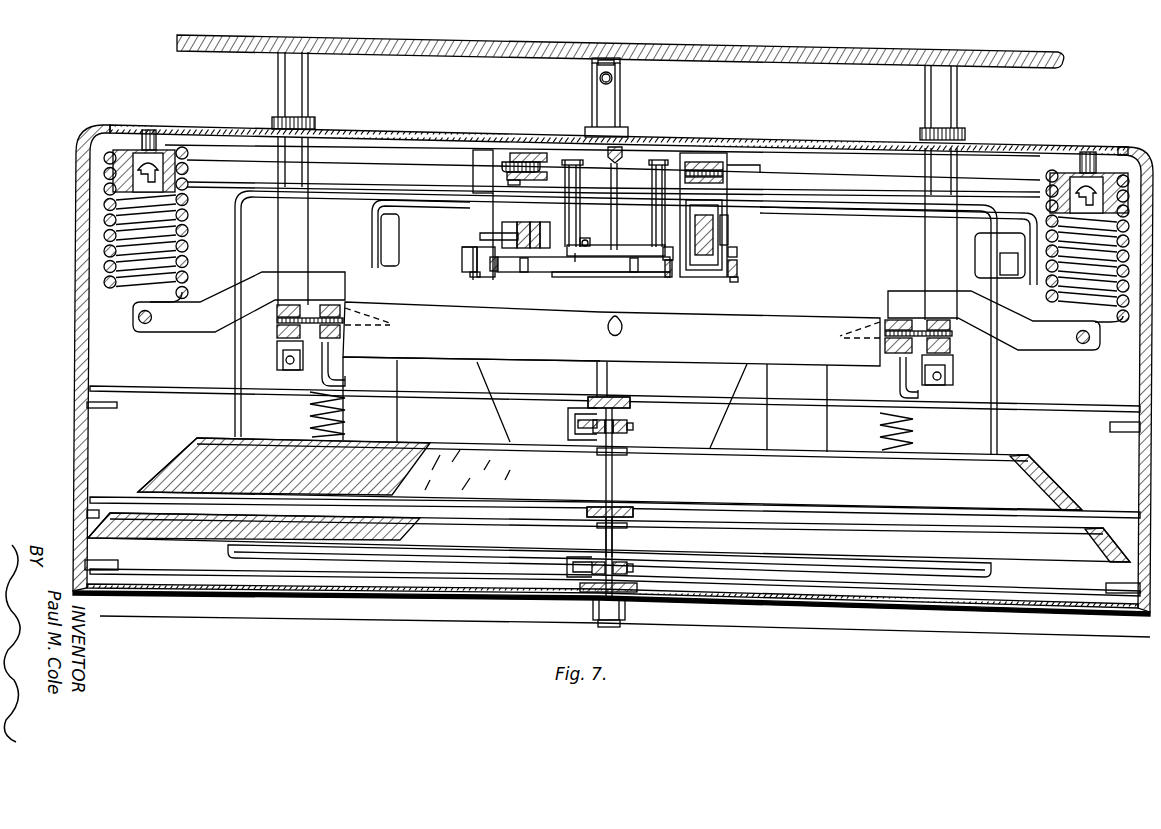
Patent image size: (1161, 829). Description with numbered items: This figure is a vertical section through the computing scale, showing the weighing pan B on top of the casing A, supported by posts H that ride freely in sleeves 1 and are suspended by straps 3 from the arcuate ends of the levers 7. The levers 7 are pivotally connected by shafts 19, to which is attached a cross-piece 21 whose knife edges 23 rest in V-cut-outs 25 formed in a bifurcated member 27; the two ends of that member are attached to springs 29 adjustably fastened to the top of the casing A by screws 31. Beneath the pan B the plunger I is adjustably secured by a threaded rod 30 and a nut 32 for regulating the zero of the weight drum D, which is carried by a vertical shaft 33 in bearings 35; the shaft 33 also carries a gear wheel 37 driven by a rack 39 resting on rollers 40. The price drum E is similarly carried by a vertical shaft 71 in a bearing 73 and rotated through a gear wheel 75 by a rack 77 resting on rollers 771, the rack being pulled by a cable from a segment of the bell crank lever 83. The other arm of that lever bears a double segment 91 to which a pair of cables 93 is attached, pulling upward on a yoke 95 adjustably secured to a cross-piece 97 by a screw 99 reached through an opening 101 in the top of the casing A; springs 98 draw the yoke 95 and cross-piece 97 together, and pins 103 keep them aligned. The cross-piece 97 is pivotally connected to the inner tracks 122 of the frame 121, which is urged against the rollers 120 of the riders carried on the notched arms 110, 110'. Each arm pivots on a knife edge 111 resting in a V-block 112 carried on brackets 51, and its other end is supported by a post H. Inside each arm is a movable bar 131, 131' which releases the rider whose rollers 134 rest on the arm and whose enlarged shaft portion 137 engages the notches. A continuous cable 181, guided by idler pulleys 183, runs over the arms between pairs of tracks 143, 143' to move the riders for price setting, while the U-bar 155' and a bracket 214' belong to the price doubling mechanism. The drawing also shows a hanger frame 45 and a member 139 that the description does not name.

The casing A is at (76, 178).
The weighing pan B is at (806, 52).
The posts H is at (308, 101).
The sleeves 1 is at (314, 125).
The plunger I is at (614, 112).
The straps 3 is at (290, 357).
The levers 7 is at (346, 302).
The shafts 19 is at (280, 321).
The cross-piece 21 is at (471, 342).
The knife edges 23 is at (614, 332).
The V-cut-outs 25 is at (622, 321).
The bifurcated member 27 is at (347, 271).
The springs 29 is at (185, 241).
The threaded rod 30 is at (602, 62).
The screws 31 is at (172, 113).
The nut 32 is at (625, 78).
The vertical shaft 33 is at (618, 541).
The bearings 35 is at (640, 499).
The gear wheel 37 is at (640, 557).
The rack 39 is at (574, 556).
The rollers 40 is at (576, 580).
The hanger frame 45 is at (233, 364).
The brackets 51 is at (490, 166).
The vertical shaft 71 is at (615, 460).
The bearing 73 is at (632, 410).
The gear wheel 75 is at (634, 421).
The rack 77 is at (572, 418).
The rollers 771 is at (580, 438).
The bell crank lever 83 is at (608, 383).
The segment 91 is at (572, 160).
The cables 93 is at (576, 211).
The yoke 95 is at (593, 254).
The cross-piece 97 is at (578, 277).
The springs 98 is at (588, 253).
The screw 99 is at (618, 173).
The opening 101 is at (625, 131).
The pins 103 is at (563, 270).
The notched arm 110 is at (729, 235).
The notched arm 110' is at (479, 230).
The knife edge 111 is at (497, 240).
The V-block 112 is at (480, 256).
The rollers 120 is at (668, 260).
The frame 121 is at (472, 278).
The tracks 122 is at (733, 262).
The movable bar 131 is at (757, 231).
The movable bar 131' is at (550, 223).
The rollers 134 is at (770, 218).
The enlarged portion 137 is at (713, 262).
The coil 139 is at (526, 230).
The tracks 143 is at (712, 195).
The tracks 143' is at (510, 192).
The U-bar 155' is at (678, 242).
The cable 181 is at (428, 163).
The idler pulleys 183 is at (505, 162).
The bracket 214' is at (672, 246).
The price drum E is at (610, 474).
The weight drum D is at (609, 537).